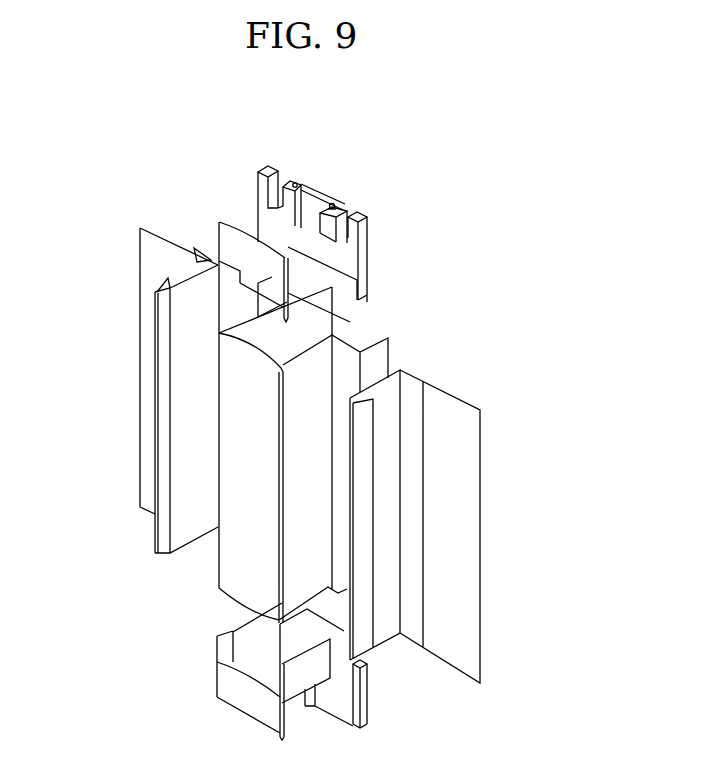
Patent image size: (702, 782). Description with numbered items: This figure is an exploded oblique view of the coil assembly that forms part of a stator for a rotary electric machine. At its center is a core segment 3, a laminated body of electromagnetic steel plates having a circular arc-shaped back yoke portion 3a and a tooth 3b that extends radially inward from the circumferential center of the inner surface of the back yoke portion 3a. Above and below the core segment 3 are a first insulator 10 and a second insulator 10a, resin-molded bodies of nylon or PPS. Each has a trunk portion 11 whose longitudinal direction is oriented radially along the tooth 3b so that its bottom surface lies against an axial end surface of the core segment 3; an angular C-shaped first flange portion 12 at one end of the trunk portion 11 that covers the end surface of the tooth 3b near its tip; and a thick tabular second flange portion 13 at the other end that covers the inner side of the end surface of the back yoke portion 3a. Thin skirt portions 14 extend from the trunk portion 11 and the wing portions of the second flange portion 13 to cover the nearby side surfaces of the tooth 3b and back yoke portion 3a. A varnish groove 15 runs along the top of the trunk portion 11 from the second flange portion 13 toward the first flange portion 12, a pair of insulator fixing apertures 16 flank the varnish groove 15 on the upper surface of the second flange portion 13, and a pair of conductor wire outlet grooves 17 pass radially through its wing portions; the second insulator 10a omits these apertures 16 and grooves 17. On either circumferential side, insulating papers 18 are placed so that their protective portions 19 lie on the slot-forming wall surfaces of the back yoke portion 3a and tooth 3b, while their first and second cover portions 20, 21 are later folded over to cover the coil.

The core segment 3 is at (343, 447).
The back yoke portion 3a is at (345, 318).
The tooth 3b is at (345, 352).
The first insulator 10 is at (268, 165).
The second insulator 10a is at (366, 703).
The trunk portion 11 is at (267, 233).
The first flange portion 12 is at (245, 250).
The second flange portion 13 is at (365, 220).
The skirt portion 14 is at (315, 282).
The varnish groove 15 is at (273, 232).
The insulator fixing aperture 16 is at (334, 204).
The conductor wire outlet groove 17 is at (283, 181).
The insulating paper 18 is at (307, 455).
The protective portion 19 is at (180, 401).
The first cover portion 20 is at (160, 284).
The second cover portion 21 is at (150, 340).